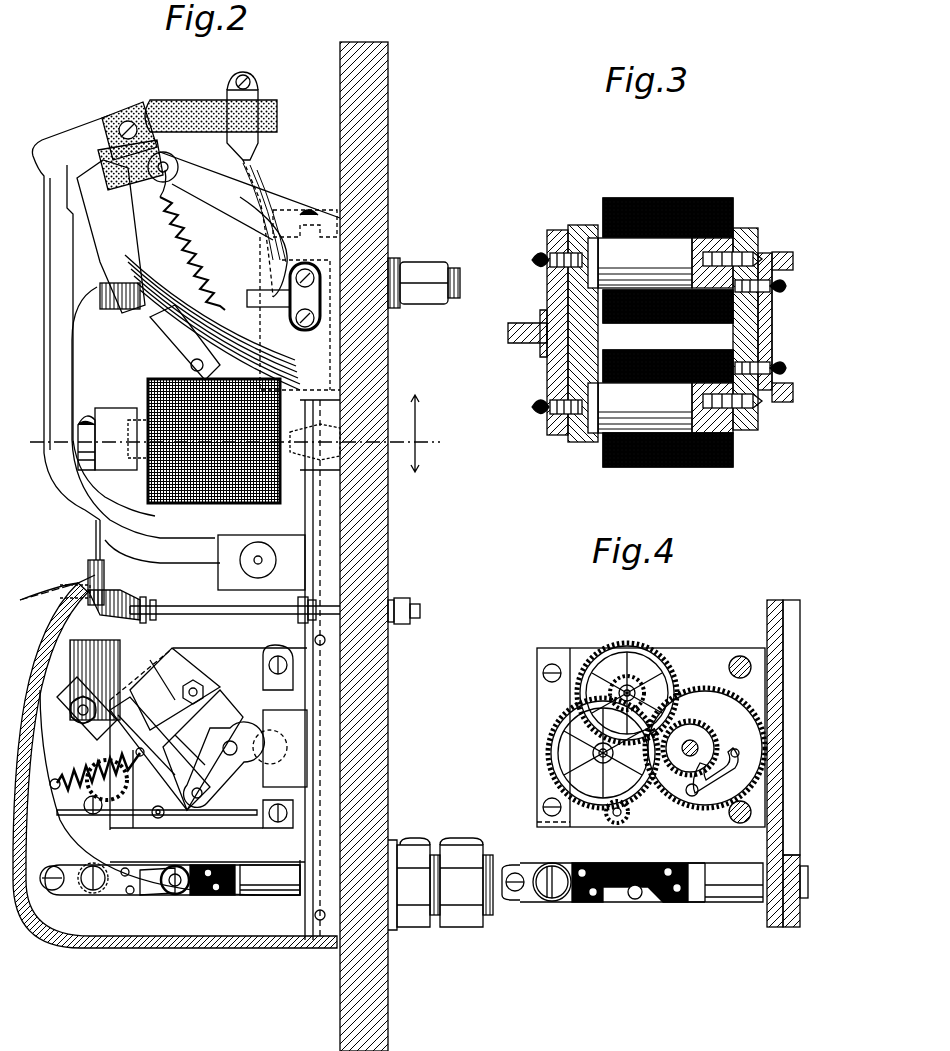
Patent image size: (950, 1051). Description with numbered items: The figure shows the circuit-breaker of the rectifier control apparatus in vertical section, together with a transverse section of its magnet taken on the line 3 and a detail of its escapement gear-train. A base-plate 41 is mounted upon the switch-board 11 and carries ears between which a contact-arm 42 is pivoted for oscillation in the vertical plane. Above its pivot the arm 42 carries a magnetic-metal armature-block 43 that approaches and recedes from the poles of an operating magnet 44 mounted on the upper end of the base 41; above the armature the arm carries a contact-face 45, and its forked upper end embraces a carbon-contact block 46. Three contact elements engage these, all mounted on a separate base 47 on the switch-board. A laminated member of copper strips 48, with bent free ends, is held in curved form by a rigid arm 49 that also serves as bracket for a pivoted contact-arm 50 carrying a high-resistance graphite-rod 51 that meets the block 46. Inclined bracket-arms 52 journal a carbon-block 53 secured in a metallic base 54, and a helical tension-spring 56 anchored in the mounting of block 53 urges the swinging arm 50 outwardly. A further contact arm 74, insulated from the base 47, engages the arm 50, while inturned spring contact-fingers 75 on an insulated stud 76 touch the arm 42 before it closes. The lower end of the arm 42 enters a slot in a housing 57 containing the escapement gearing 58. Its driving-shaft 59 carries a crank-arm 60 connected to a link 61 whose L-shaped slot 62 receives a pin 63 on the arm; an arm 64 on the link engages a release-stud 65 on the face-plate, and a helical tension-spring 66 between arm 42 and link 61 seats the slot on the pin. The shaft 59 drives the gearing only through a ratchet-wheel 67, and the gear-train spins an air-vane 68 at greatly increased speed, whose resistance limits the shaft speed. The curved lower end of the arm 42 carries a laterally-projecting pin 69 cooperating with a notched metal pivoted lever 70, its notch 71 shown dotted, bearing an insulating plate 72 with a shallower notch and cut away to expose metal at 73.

In FIG. 2, the switch-board 11 is at (388, 178).
In FIG. 2, the base-plate 41 is at (320, 517).
In FIG. 3, the base-plate 41 is at (770, 253).
In FIG. 4, the base-plate 41 is at (672, 763).
In FIG. 2, the contact-arm 42 is at (90, 243).
In FIG. 2, the armature-block 43 is at (120, 408).
In FIG. 3, the armature-block 43 is at (580, 228).
In FIG. 2, the operating magnet 44 is at (215, 503).
In FIG. 3, the operating magnet 44 is at (648, 326).
In FIG. 2, the contact-face 45 is at (112, 260).
In FIG. 2, the carbon-contact block 46 is at (128, 118).
In FIG. 2, the separate base 47 is at (290, 205).
In FIG. 2, the copper strips 48 is at (150, 248).
In FIG. 2, the rigid arm 49 is at (160, 333).
In FIG. 2, the pivoted contact-arm 50 is at (240, 260).
In FIG. 2, the graphite-rod 51 is at (200, 90).
In FIG. 2, the bracket-arms 52 is at (252, 140).
In FIG. 2, the carbon-block 53 is at (175, 157).
In FIG. 2, the metallic base 54 is at (140, 192).
In FIG. 2, the helical tension-spring 56 is at (180, 255).
In FIG. 2, the housing 57 is at (45, 615).
In FIG. 4, the escapement gearing 58 is at (690, 690).
In FIG. 2, the driving-shaft 59 is at (240, 720).
In FIG. 4, the driving-shaft 59 is at (690, 740).
In FIG. 2, the crank-arm 60 is at (228, 740).
In FIG. 2, the link 61 is at (170, 770).
In FIG. 2, the L-shaped slot 62 is at (105, 665).
In FIG. 2, the pin 63 is at (135, 690).
In FIG. 2, the arm 64 is at (190, 720).
In FIG. 2, the release-stud 65 is at (193, 688).
In FIG. 2, the helical tension-spring 66 is at (70, 725).
In FIG. 4, the ratchet-wheel 67 is at (705, 752).
In FIG. 2, the air-vane 68 is at (228, 810).
In FIG. 2, the laterally-projecting pin 69 is at (180, 895).
In FIG. 4, the laterally-projecting pin 69 is at (634, 899).
In FIG. 2, the pivoted lever 70 is at (100, 890).
In FIG. 4, the pivoted lever 70 is at (545, 897).
In FIG. 2, the notch 71 is at (152, 898).
In FIG. 4, the notch 71 is at (622, 875).
In FIG. 2, the insulating plate 72 is at (195, 868).
In FIG. 4, the insulating plate 72 is at (680, 866).
In FIG. 2, the exposed metal 73 is at (215, 895).
In FIG. 4, the exposed metal 73 is at (670, 902).
In FIG. 2, the contact arm 74 is at (298, 298).
In FIG. 2, the spring contact-fingers 75 is at (105, 593).
In FIG. 2, the stud 76 is at (222, 618).
In FIG. 2, the section line 3 is at (425, 433).